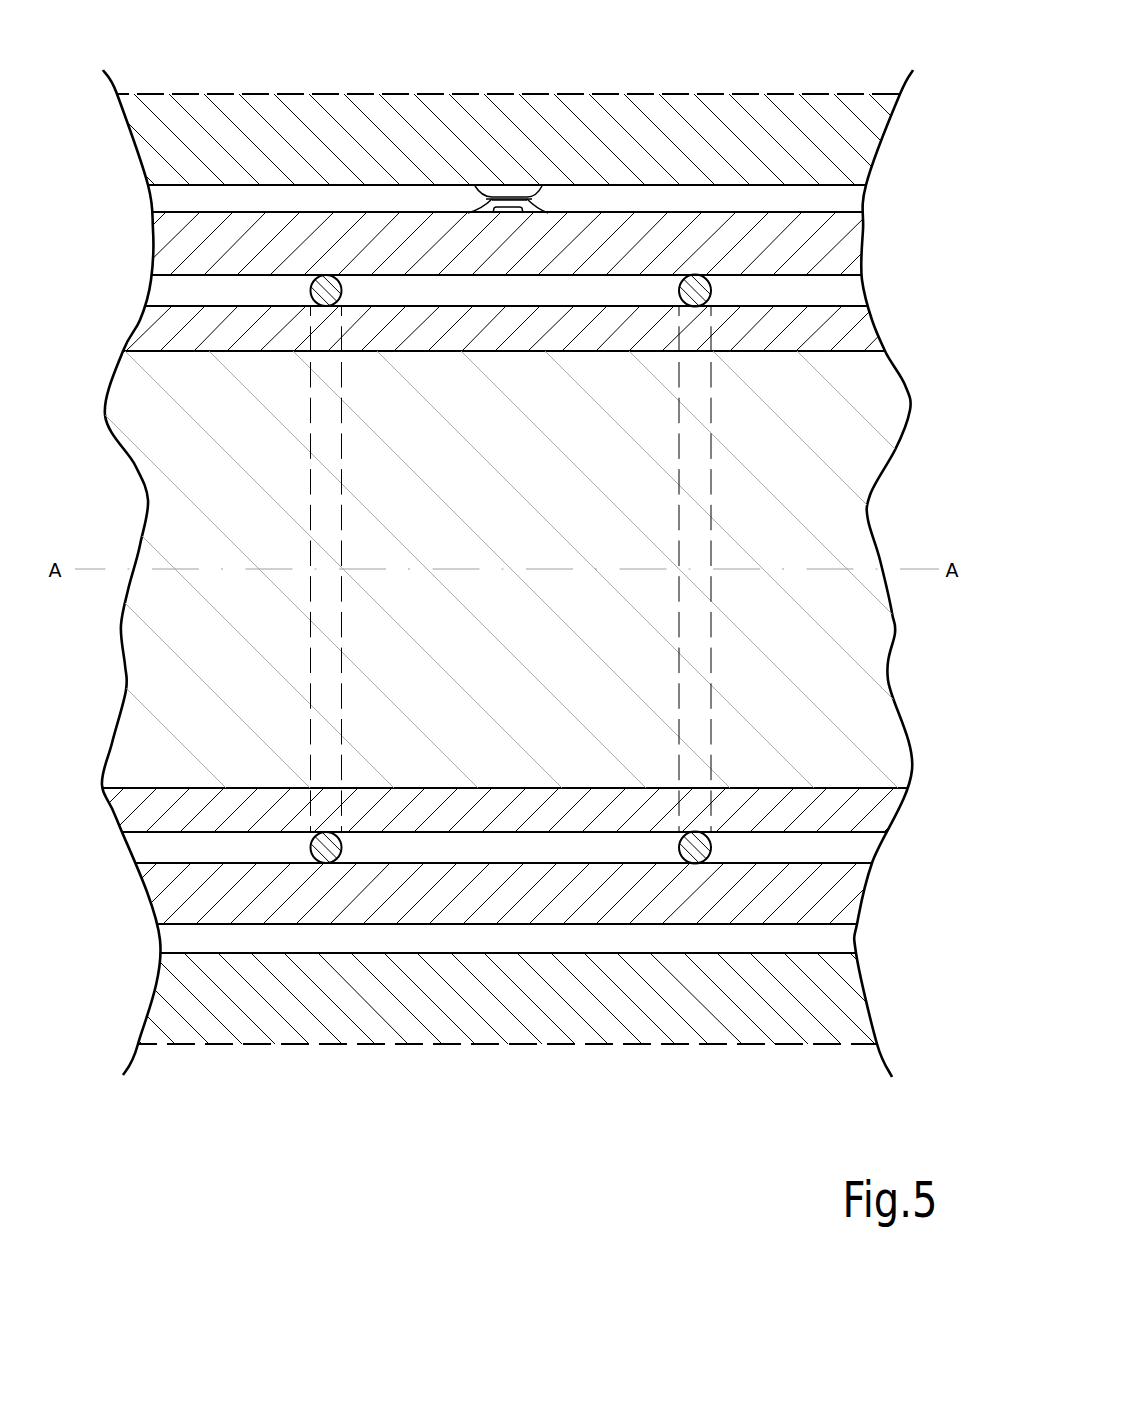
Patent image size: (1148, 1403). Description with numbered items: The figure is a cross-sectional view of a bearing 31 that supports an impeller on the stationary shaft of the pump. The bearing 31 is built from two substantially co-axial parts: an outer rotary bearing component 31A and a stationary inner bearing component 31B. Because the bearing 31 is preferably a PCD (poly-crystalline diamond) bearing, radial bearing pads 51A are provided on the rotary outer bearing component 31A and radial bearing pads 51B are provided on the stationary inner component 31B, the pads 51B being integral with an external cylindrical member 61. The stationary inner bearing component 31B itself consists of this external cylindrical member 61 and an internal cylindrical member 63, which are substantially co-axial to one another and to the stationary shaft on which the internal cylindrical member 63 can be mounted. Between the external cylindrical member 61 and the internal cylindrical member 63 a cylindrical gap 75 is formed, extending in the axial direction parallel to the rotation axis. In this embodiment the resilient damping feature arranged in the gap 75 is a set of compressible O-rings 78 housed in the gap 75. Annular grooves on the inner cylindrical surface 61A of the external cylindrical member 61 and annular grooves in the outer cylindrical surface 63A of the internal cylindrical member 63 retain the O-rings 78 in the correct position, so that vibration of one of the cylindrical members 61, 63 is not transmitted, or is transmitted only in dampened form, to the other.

The bearing 31 is at (166, 45).
The outer rotary bearing component 31A is at (343, 113).
The stationary inner bearing component 31B is at (773, 250).
The radial bearing pads 51A is at (501, 190).
The radial bearing pads 51B is at (540, 209).
The external cylindrical member 61 is at (643, 228).
The inner cylindrical surface 61A is at (832, 292).
The internal cylindrical member 63 is at (803, 330).
The outer cylindrical surface 63A is at (180, 291).
The cylindrical gap 75 is at (472, 294).
The O-rings 78 is at (311, 289).